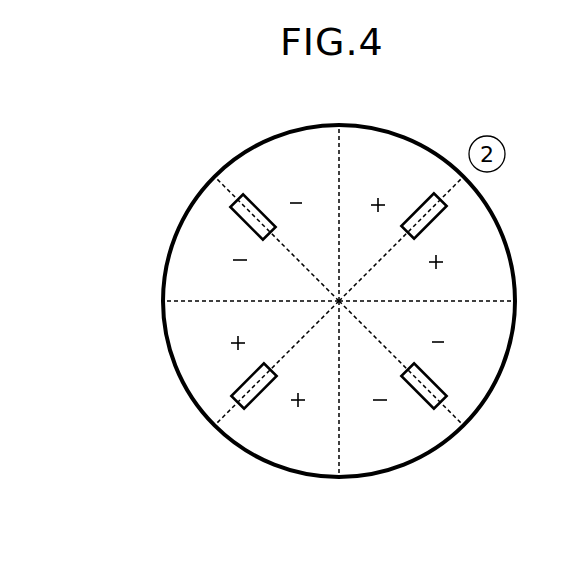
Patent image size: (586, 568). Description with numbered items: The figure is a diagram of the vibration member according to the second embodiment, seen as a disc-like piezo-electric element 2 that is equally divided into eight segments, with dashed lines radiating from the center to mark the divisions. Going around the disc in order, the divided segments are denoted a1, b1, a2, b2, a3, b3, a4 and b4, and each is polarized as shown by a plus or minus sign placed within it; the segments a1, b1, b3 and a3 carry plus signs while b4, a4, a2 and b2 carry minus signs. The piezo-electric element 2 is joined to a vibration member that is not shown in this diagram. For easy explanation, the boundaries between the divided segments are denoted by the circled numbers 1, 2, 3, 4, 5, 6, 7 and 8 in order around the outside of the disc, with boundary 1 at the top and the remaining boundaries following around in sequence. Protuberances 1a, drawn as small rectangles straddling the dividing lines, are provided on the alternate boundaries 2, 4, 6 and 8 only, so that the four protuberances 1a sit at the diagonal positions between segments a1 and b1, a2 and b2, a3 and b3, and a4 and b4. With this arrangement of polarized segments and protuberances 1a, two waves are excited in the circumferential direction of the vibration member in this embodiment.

The protuberance 1a is at (431, 194).
The piezo-electric element 2 is at (498, 352).
The boundary 1 is at (336, 187).
The boundary 3 is at (454, 302).
The boundary 4 is at (423, 385).
The boundary 5 is at (340, 416).
The boundary 6 is at (255, 386).
The boundary 7 is at (222, 302).
The boundary 8 is at (254, 218).
The divided segment a1 is at (370, 189).
The divided segment a2 is at (452, 354).
The divided segment a3 is at (301, 418).
The divided segment a4 is at (217, 270).
The divided segment b1 is at (460, 268).
The divided segment b2 is at (372, 421).
The divided segment b3 is at (217, 350).
The divided segment b4 is at (293, 184).